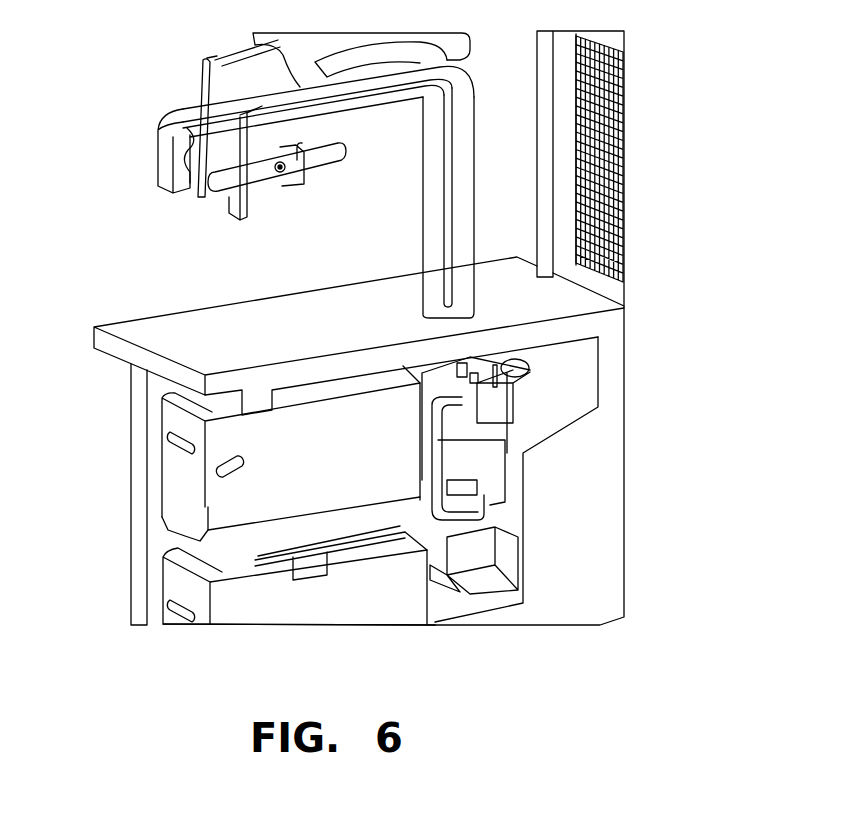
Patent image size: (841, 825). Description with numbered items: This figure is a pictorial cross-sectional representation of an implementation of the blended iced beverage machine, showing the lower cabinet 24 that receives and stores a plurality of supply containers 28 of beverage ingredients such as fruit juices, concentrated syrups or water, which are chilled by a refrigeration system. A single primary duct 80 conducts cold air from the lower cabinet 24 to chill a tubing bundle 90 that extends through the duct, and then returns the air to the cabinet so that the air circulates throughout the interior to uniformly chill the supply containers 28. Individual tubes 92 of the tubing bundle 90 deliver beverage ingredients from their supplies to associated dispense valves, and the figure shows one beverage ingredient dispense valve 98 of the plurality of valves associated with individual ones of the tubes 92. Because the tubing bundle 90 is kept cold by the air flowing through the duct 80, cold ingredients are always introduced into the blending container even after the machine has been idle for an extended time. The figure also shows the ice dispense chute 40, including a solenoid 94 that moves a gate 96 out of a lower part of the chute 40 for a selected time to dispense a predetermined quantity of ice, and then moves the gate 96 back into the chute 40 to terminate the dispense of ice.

The lower cabinet 24 is at (598, 530).
The supply containers 28 is at (307, 606).
The ice dispense chute 40 is at (250, 193).
The primary duct 80 is at (445, 248).
The tubing bundle 90 is at (447, 165).
The tubes 92 is at (173, 125).
The solenoid 94 is at (313, 190).
The gate 96 is at (220, 197).
The beverage ingredient dispense valve 98 is at (187, 175).